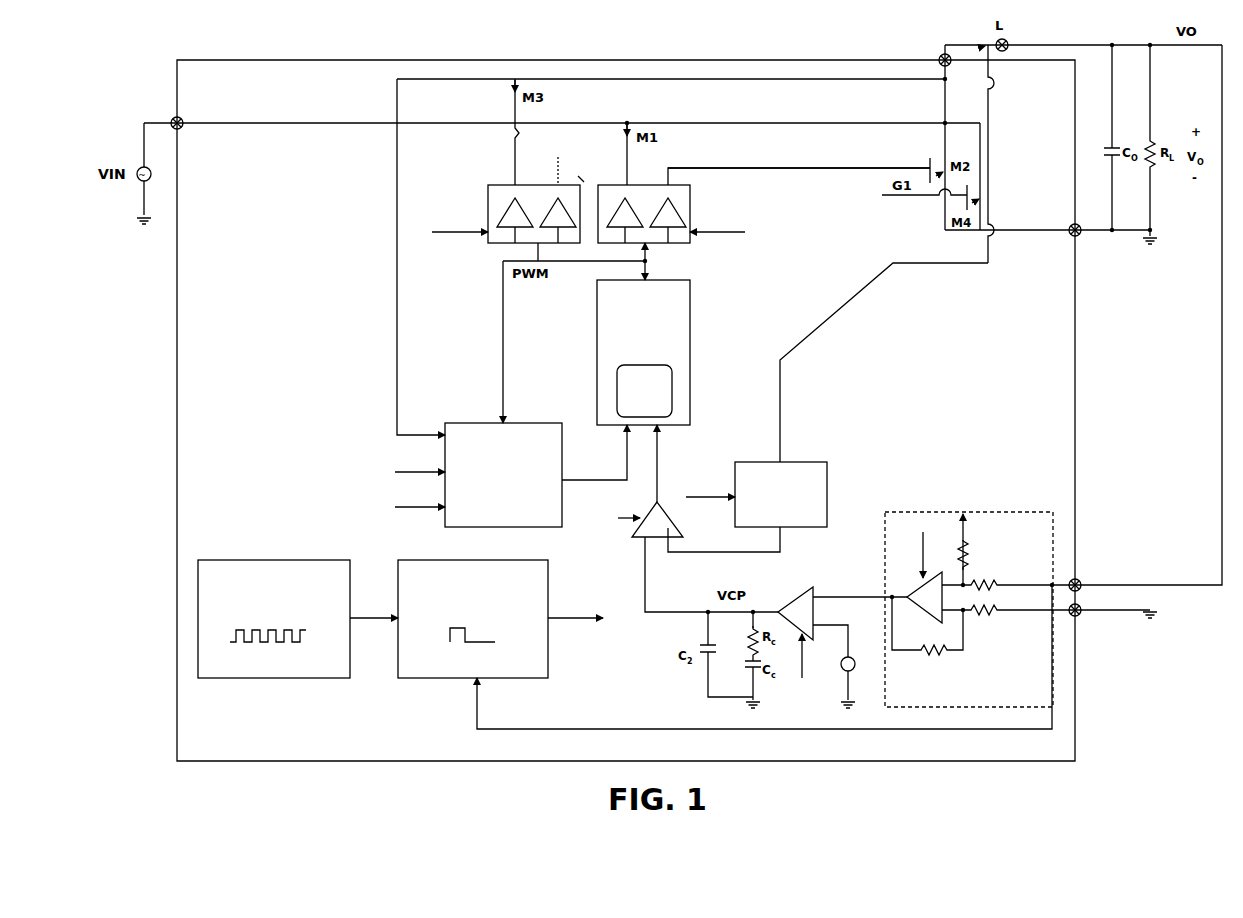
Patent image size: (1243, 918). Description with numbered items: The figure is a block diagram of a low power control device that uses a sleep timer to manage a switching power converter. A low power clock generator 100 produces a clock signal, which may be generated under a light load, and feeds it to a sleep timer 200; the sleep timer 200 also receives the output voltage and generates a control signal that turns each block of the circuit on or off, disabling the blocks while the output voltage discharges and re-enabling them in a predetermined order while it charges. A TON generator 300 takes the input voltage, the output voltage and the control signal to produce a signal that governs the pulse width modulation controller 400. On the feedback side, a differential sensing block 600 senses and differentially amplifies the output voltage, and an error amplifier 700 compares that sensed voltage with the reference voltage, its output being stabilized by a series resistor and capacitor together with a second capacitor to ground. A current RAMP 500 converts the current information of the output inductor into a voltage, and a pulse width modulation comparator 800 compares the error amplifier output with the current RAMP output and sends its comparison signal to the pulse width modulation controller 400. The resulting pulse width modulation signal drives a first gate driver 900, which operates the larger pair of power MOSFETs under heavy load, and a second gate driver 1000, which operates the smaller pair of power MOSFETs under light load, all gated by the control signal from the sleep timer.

The low power clock generator 100 is at (280, 560).
The sleep timer 200 is at (490, 560).
The TON generator 300 is at (540, 423).
The pulse width modulation (PWM) controller 400 is at (690, 362).
The current RAMP 500 is at (815, 462).
The differential sensing block 600 is at (1008, 512).
The error amplifier 700 is at (808, 645).
The pulse width modulation (PWM) comparator 800 is at (680, 522).
The first gate driver 900 is at (693, 193).
The second gate driver 1000 is at (532, 200).